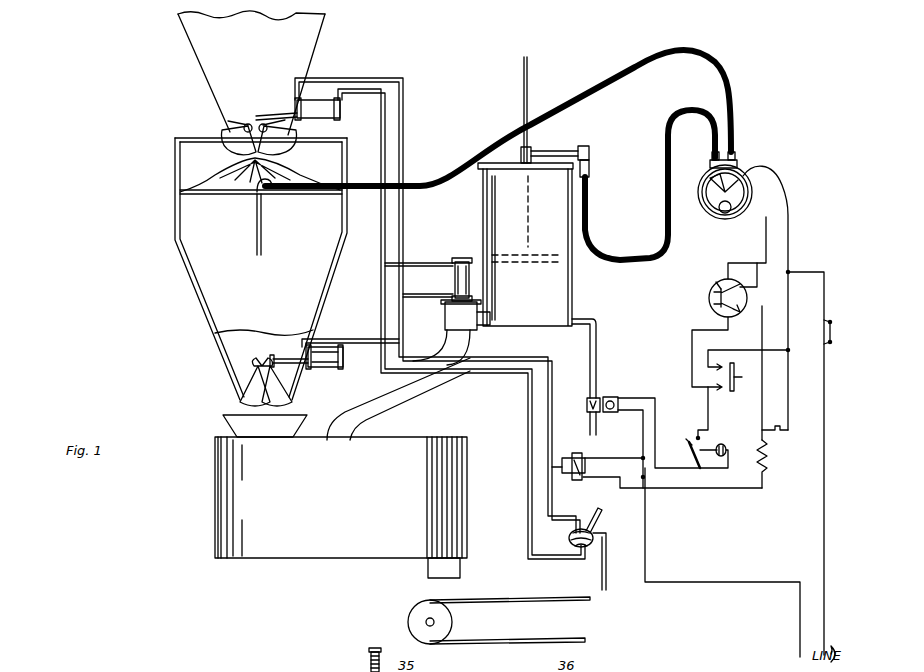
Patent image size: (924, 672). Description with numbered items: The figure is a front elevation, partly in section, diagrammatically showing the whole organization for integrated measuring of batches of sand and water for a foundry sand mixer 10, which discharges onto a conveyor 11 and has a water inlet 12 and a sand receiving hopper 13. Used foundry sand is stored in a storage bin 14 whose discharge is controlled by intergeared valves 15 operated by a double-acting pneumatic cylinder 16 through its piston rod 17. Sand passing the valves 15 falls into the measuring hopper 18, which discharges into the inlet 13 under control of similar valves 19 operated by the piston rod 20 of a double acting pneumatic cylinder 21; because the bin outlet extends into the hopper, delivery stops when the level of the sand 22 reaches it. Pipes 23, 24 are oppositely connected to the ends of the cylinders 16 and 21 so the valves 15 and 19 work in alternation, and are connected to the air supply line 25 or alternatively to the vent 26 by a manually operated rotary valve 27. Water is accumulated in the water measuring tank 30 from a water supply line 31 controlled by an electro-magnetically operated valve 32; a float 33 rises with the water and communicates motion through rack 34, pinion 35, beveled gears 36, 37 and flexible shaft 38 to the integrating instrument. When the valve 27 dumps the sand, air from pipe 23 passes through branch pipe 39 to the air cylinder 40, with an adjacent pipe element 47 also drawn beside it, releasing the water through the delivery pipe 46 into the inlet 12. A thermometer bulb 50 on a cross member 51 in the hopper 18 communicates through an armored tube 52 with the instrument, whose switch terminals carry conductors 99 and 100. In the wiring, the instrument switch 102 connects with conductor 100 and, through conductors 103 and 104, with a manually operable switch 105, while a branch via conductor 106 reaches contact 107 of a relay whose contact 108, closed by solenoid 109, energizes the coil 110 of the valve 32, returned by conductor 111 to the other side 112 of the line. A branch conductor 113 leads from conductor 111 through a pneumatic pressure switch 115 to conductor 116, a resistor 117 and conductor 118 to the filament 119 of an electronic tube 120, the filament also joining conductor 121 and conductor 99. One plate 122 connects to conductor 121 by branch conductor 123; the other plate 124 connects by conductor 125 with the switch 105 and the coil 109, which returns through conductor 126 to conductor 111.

The mixer 10 is at (341, 507).
The conveyor 11 is at (506, 596).
The water inlet 12 is at (347, 430).
The sand receiving hopper 13 is at (226, 427).
The storage bin 14 is at (215, 58).
The valves 15 is at (228, 132).
The double-acting pneumatic cylinder 16 is at (318, 104).
The piston rod 17 is at (278, 112).
The measuring hopper 18 is at (195, 284).
The valves 19 is at (238, 390).
The piston rod 20 is at (298, 357).
The double acting pneumatic cylinder 21 is at (320, 370).
The sand 22 is at (215, 262).
The pipe 23 is at (405, 158).
The pipe 24 is at (380, 165).
The air supply line 25 is at (608, 579).
The vent 26 is at (570, 538).
The rotary valve 27 is at (598, 528).
The water measuring tank 30 is at (570, 280).
The water supply line 31 is at (598, 353).
The electro-magnetically operated valve 32 is at (586, 406).
The float 33 is at (553, 262).
The rack 34 is at (529, 62).
The pinion 35 is at (534, 152).
The beveled gear 36 is at (588, 150).
The beveled gear 37 is at (592, 160).
The flexible shaft 38 is at (666, 183).
The branch pipe 39 is at (445, 306).
The air cylinder 40 is at (455, 280).
The delivery pipe 46 is at (462, 342).
The pipe 47 is at (424, 262).
The bulb 50 is at (258, 236).
The cross member 51 is at (205, 187).
The armored tube 52 is at (724, 52).
The conductor 99 is at (762, 214).
The conductor 100 is at (782, 210).
The instrument switch 102 is at (822, 345).
The conductor 103 is at (788, 321).
The conductor 104 is at (722, 350).
The switch 105 is at (735, 374).
The conductor 106 is at (784, 432).
The contact 107 is at (700, 434).
The contact 108 is at (685, 449).
The solenoid 109 is at (725, 450).
The coil 110 is at (610, 396).
The conductor 111 is at (647, 558).
The other side of the line 112 is at (800, 630).
The branch conductor 113 is at (584, 457).
The pneumatic pressure switch 115 is at (573, 452).
The conductor 116 is at (694, 489).
The resistor 117 is at (772, 462).
The conductor 118 is at (762, 398).
The filament 119 is at (716, 280).
The electronic tube 120 is at (709, 300).
The conductor 121 is at (766, 248).
The plate 122 is at (712, 292).
The branch conductor 123 is at (728, 262).
The plate 124 is at (714, 309).
The conductor 125 is at (698, 353).
The conductor 126 is at (706, 470).